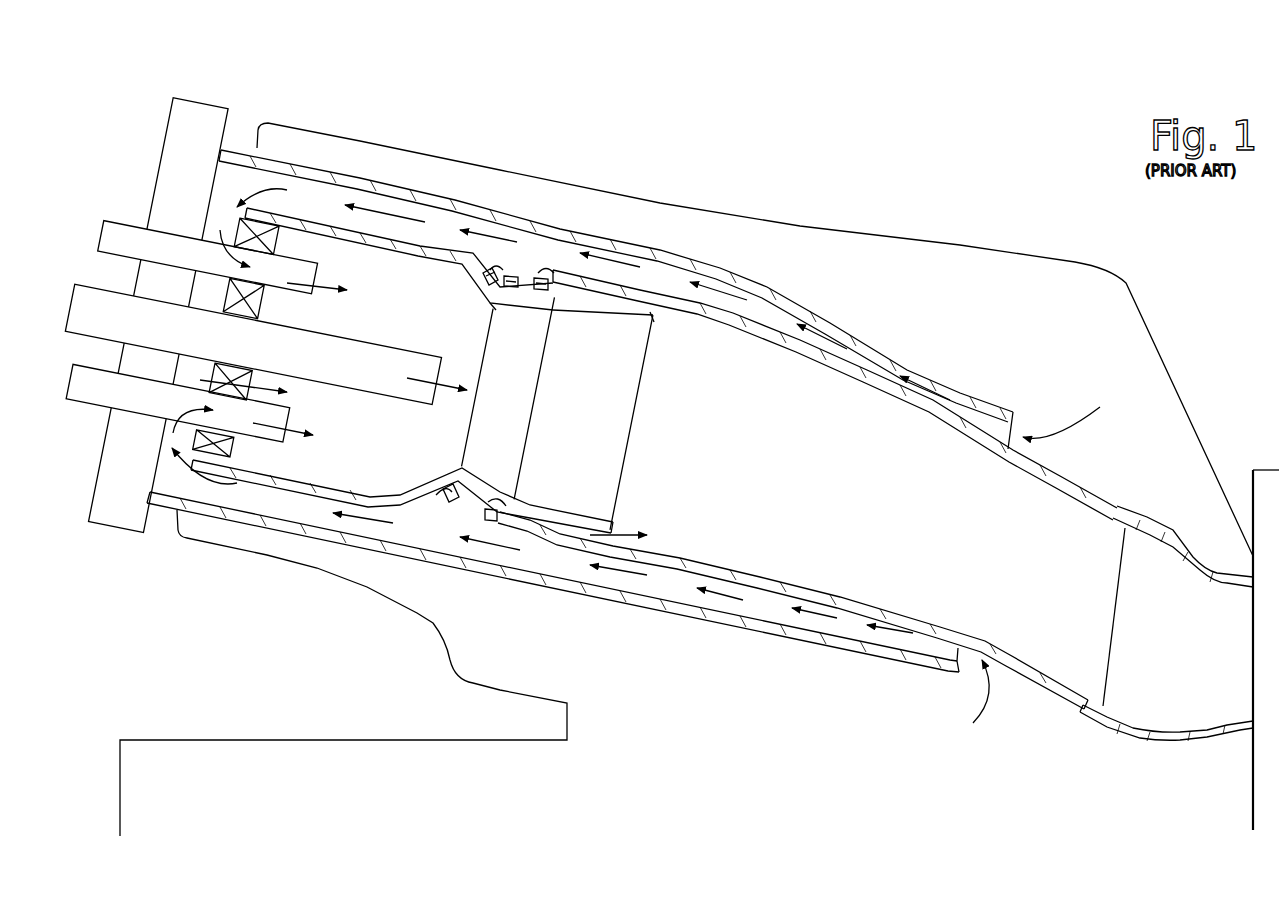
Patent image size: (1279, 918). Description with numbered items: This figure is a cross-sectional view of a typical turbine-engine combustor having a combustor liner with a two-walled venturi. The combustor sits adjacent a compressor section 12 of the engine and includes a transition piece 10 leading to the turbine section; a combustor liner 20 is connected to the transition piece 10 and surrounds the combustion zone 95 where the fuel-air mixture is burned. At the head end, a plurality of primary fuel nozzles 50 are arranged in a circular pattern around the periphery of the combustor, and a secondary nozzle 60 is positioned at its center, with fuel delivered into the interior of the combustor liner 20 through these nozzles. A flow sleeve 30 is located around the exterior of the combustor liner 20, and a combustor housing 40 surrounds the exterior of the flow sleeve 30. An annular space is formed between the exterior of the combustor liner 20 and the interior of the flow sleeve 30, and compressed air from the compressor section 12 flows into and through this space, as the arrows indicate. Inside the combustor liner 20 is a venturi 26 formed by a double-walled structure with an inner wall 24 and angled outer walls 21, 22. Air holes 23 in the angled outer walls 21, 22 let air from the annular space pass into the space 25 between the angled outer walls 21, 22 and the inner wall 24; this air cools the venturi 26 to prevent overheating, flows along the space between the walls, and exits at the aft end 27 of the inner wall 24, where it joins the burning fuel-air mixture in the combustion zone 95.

The transition piece 10 is at (1186, 740).
The compressor section 12 is at (490, 780).
The combustor liner 20 is at (873, 375).
The angled outer wall 21 is at (504, 280).
The angled outer wall 22 is at (534, 278).
The air holes 23 is at (483, 273).
The inner wall 24 is at (487, 287).
The space 25 is at (640, 241).
The venturi 26 is at (500, 310).
The aft end 27 is at (652, 333).
The flow sleeve 30 is at (768, 288).
The combustor housing 40 is at (858, 234).
The primary fuel nozzles 50 is at (128, 228).
The secondary nozzle 60 is at (183, 343).
The combustion zone 95 is at (520, 417).